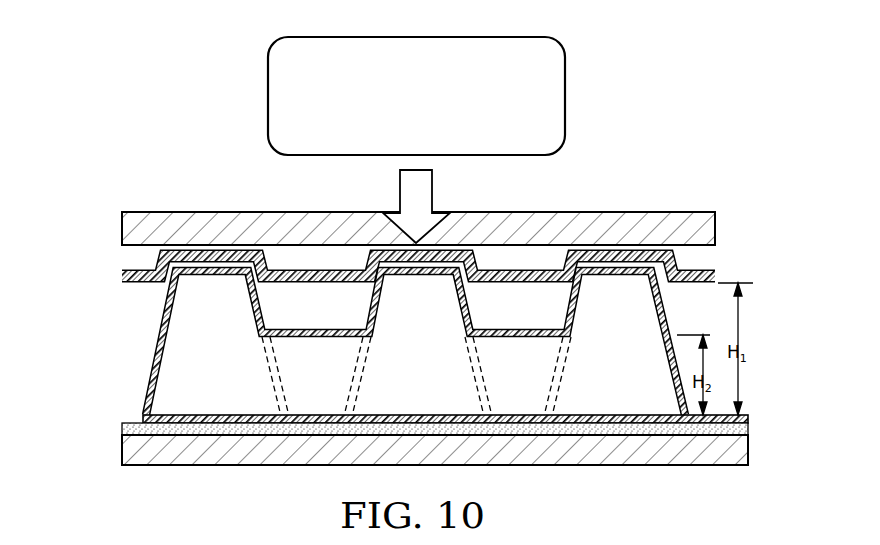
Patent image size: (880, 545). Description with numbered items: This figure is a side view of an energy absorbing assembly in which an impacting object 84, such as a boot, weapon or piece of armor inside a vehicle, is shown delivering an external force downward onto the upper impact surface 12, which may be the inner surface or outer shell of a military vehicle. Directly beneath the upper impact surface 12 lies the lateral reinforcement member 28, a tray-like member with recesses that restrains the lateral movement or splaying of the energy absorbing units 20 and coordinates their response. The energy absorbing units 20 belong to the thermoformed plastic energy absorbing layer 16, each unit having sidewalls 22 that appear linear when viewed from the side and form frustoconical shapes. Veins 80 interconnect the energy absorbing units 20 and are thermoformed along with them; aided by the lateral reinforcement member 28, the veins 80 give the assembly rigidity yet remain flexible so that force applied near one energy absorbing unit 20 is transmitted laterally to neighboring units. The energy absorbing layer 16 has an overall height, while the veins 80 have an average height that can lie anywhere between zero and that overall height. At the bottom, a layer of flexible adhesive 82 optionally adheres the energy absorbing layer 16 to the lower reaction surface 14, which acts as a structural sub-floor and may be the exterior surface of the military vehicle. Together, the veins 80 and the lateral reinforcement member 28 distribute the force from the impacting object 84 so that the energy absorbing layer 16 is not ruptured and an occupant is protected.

The impacting object 84 is at (565, 97).
The upper impact surface 12 is at (716, 232).
The lateral reinforcement member 28 is at (716, 278).
The energy absorbing layer 16 is at (110, 272).
The veins 80 is at (313, 360).
The energy absorbing unit 20 is at (412, 332).
The sidewall 22 is at (465, 308).
The adhesive 82 is at (123, 428).
The lower reaction surface 14 is at (606, 466).